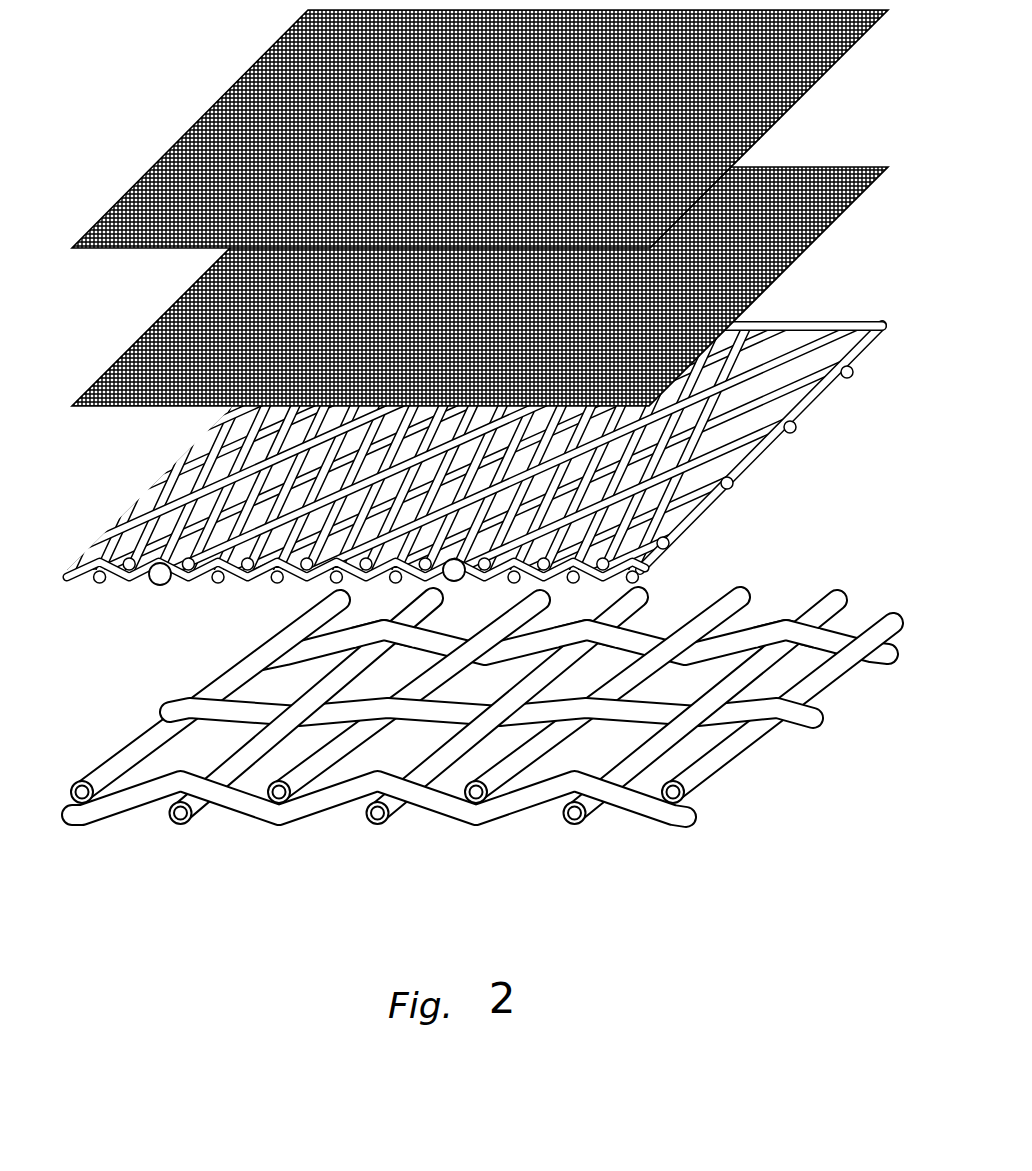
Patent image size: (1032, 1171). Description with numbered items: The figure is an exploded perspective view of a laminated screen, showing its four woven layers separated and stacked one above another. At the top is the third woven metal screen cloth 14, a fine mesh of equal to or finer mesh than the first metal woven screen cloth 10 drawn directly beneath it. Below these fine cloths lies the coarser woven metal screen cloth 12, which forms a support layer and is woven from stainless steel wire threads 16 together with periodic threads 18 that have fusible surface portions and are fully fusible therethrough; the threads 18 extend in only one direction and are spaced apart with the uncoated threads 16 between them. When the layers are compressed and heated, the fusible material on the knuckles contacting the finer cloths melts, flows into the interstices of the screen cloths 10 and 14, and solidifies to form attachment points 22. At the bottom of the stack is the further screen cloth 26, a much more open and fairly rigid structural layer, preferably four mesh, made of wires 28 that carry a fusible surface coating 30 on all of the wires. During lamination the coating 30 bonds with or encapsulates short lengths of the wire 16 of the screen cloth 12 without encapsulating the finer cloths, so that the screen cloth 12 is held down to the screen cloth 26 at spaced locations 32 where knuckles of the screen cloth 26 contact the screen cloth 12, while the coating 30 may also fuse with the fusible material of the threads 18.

The first metal woven screen cloth 10 is at (808, 246).
The coarser woven metal screen cloth 12 is at (516, 448).
The third woven metal screen cloth 14 is at (814, 84).
The stainless steel wire threads 16 is at (240, 581).
The periodic threads 18 is at (153, 582).
The attachment points 22 is at (250, 471).
The further screen cloth 26 is at (500, 720).
The wires 28 is at (497, 793).
The fusible surface coating 30 is at (452, 788).
The spaced locations 32 is at (670, 638).